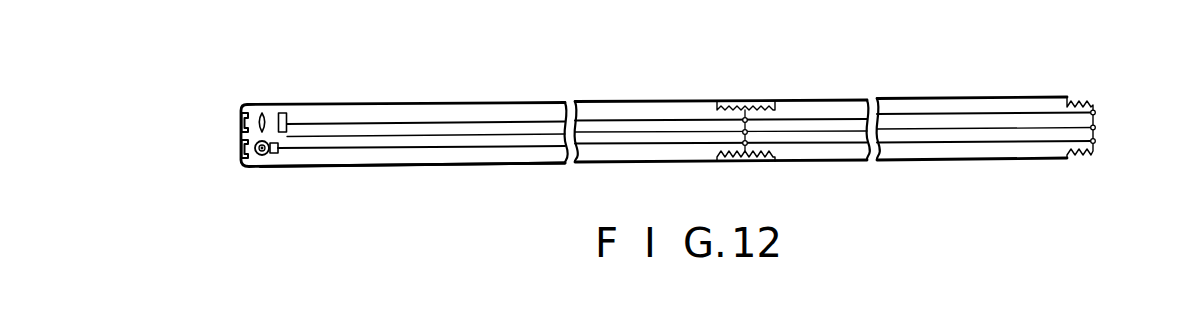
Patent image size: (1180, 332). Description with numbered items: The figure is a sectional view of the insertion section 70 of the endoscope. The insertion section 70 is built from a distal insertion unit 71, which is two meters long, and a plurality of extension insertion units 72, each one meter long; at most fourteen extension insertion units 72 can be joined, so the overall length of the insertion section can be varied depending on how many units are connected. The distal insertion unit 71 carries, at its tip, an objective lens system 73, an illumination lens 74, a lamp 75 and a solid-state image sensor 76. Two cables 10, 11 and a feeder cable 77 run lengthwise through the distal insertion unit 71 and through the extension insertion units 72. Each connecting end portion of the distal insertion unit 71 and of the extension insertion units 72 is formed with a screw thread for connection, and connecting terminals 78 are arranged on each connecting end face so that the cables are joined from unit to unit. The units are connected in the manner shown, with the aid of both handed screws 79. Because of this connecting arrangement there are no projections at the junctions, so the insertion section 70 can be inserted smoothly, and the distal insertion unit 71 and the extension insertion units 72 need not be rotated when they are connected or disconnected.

The cable 10 is at (403, 137).
The cable 11 is at (448, 122).
The insertion section 70 is at (647, 90).
The distal insertion unit 71 is at (480, 167).
The extension insertion unit 72 is at (958, 160).
The objective lens system 73 is at (260, 114).
The illumination lens 74 is at (241, 151).
The lamp 75 is at (263, 157).
The solid-state image sensor 76 is at (283, 113).
The feeder cable 77 is at (383, 150).
The connecting terminal 78 is at (1096, 113).
The both handed screw 79 is at (745, 101).